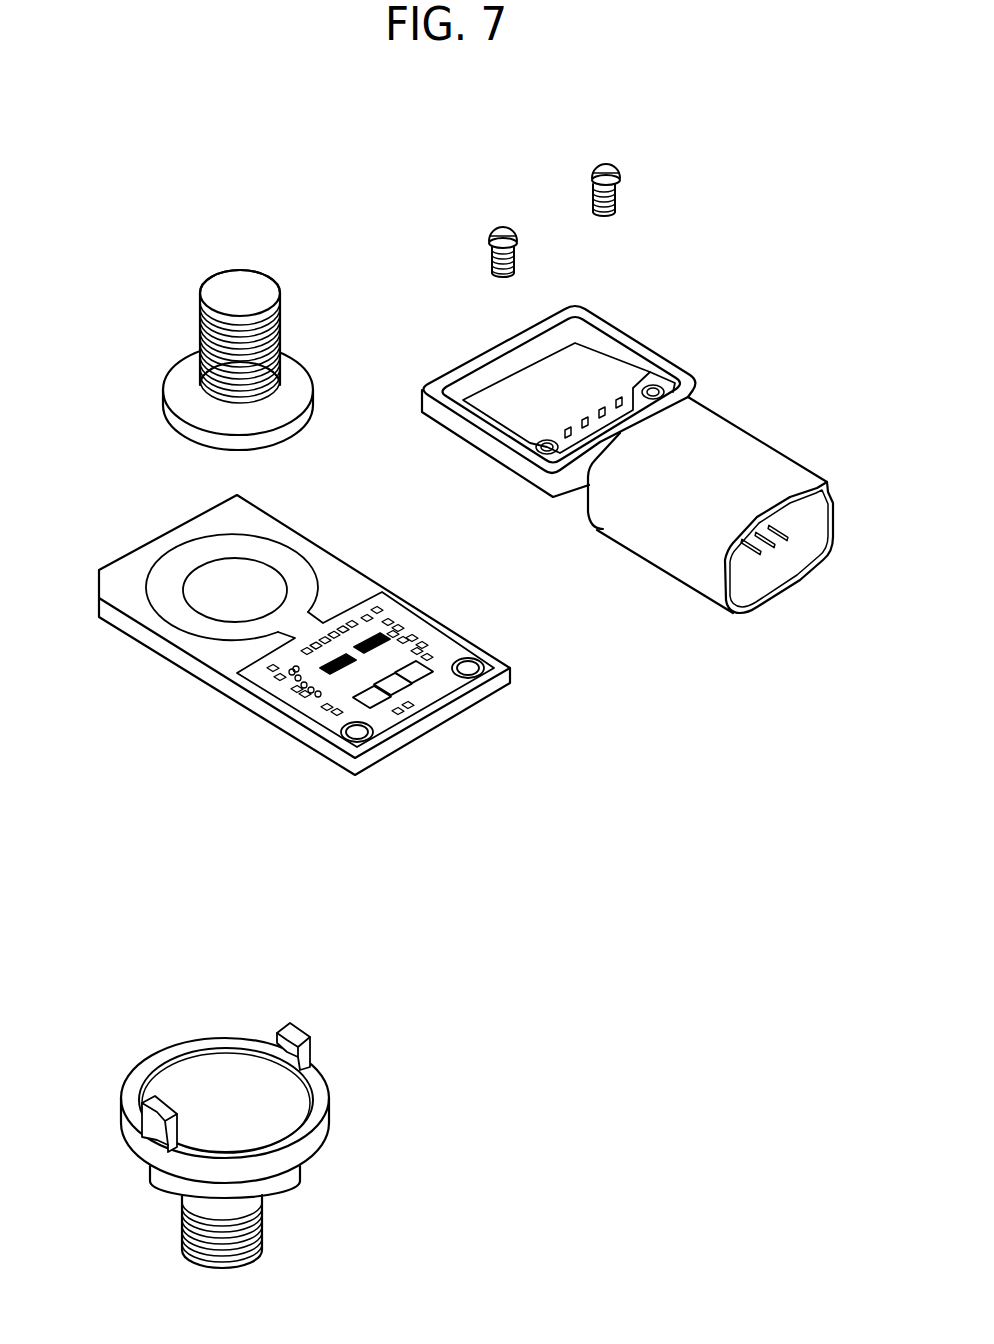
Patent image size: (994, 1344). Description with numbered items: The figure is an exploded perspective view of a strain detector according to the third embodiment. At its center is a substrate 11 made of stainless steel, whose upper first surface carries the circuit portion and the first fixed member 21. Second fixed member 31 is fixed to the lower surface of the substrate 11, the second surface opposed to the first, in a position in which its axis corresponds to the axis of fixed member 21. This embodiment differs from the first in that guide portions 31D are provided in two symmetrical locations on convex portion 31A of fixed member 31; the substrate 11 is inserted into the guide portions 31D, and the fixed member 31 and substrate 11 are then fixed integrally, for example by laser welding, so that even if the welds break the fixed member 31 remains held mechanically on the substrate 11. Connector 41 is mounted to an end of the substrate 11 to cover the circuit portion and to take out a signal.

The substrate 11 is at (157, 647).
The fixed member 21 is at (220, 287).
The second fixed member 31 is at (259, 1075).
The convex portion 31A is at (317, 1083).
The guide portions 31D is at (172, 1017).
The connector 41 is at (735, 452).